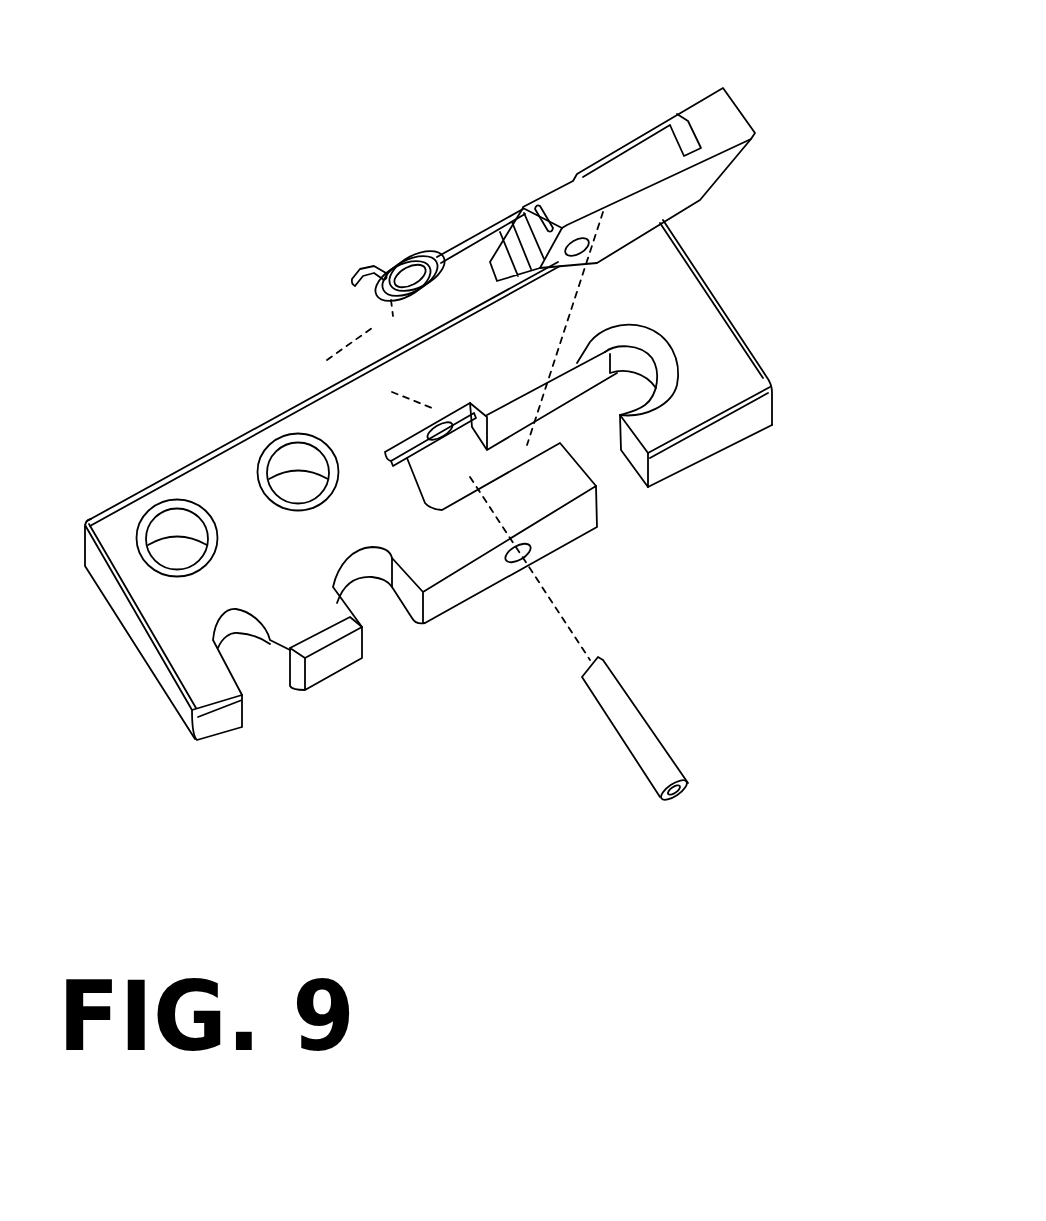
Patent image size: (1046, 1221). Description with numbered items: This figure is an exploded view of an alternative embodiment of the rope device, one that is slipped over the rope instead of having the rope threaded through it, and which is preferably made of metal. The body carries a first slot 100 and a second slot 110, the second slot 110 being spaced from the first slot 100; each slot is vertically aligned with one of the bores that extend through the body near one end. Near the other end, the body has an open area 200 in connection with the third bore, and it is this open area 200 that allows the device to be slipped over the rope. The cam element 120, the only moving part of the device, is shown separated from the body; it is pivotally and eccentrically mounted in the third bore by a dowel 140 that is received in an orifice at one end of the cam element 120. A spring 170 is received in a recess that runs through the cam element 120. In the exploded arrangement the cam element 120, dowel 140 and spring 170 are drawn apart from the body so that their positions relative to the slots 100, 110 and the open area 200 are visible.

The first slot 100 is at (370, 608).
The second slot 110 is at (257, 677).
The cam element 120 is at (650, 175).
The dowel 140 is at (646, 737).
The spring 170 is at (397, 260).
The open area 200 is at (610, 480).